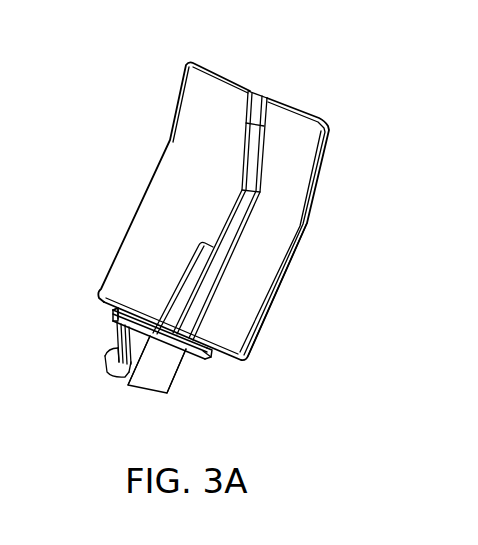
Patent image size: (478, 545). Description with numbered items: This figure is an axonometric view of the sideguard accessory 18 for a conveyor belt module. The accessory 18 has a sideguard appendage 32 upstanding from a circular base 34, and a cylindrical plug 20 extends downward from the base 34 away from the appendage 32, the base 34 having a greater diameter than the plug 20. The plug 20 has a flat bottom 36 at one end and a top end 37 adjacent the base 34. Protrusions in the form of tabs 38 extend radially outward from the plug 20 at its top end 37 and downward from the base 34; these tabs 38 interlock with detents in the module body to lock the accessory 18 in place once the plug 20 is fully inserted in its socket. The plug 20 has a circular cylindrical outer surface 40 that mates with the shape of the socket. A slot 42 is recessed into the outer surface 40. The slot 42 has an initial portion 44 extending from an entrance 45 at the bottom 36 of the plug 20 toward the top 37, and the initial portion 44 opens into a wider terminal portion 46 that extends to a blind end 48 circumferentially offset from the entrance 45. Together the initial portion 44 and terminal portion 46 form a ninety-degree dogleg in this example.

The accessory 18 is at (322, 81).
The plug 20 is at (107, 365).
The sideguard appendage 32 is at (288, 257).
The circular base 34 is at (116, 313).
The flat bottom 36 is at (140, 378).
The top end 37 is at (177, 356).
The tabs 38 is at (115, 327).
The outer surface 40 is at (173, 378).
The slot 42 is at (123, 386).
The initial portion 44 is at (123, 368).
The entrance 45 is at (125, 375).
The terminal portion 46 is at (130, 348).
The blind end 48 is at (143, 386).